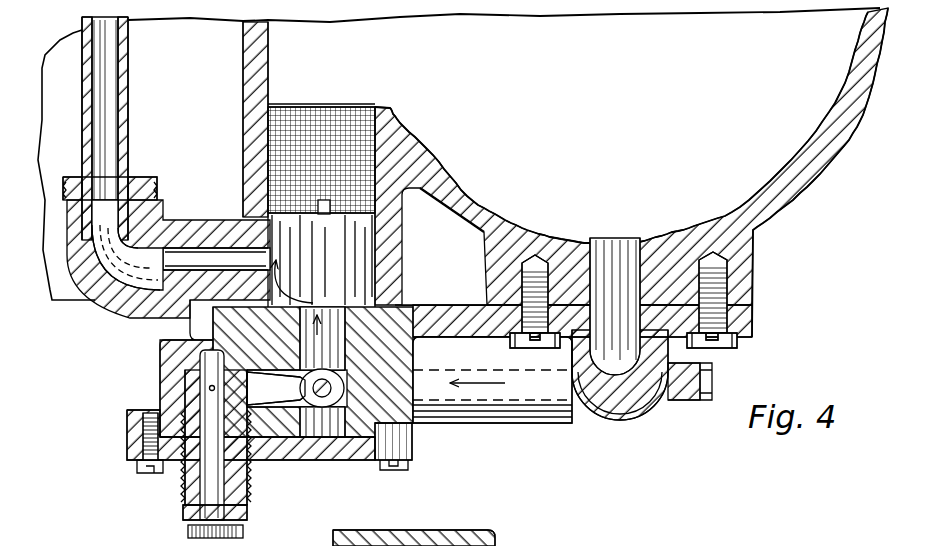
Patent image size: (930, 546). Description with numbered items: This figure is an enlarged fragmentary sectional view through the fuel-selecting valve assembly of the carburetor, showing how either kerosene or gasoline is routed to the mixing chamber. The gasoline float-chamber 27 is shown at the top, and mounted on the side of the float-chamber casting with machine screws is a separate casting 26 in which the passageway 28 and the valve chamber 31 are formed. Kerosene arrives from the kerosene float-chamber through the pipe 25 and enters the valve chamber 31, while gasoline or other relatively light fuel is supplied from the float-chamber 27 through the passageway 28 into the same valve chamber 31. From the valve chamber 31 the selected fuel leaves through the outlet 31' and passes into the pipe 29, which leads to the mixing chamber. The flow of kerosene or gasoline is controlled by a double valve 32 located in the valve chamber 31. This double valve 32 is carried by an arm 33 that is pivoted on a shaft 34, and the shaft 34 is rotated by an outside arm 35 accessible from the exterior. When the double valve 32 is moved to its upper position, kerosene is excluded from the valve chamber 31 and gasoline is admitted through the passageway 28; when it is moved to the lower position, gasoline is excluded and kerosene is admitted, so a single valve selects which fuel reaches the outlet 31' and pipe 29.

The pipe 25 is at (313, 545).
The casting 26 is at (463, 407).
The float-chamber 27 is at (802, 137).
The passageway 28 is at (626, 405).
The pipe 29 is at (110, 147).
The valve chamber 31 is at (300, 430).
The outlet 31' is at (444, 246).
The double valve 32 is at (363, 457).
The arm 33 is at (190, 328).
The shaft 34 is at (213, 493).
The outside arm 35 is at (232, 537).